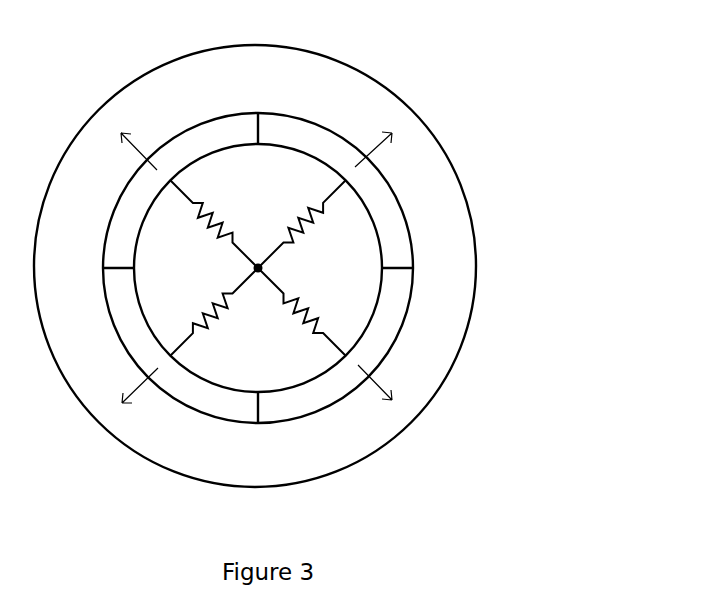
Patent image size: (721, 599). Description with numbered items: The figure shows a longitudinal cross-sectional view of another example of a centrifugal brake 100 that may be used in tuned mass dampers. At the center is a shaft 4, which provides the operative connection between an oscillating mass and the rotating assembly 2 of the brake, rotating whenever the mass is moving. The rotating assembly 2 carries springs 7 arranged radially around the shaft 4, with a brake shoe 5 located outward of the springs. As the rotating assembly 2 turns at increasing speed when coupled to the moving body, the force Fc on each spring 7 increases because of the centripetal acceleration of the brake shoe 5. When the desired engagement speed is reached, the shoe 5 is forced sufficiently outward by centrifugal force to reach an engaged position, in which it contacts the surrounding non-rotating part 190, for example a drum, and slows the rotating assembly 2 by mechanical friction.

The rotating assembly 2 is at (281, 112).
The shaft 4 is at (262, 268).
The brake shoe 5 is at (135, 197).
The spring 7 is at (210, 200).
The centrifugal brake 100 is at (483, 128).
The non-rotating part 190 is at (469, 330).